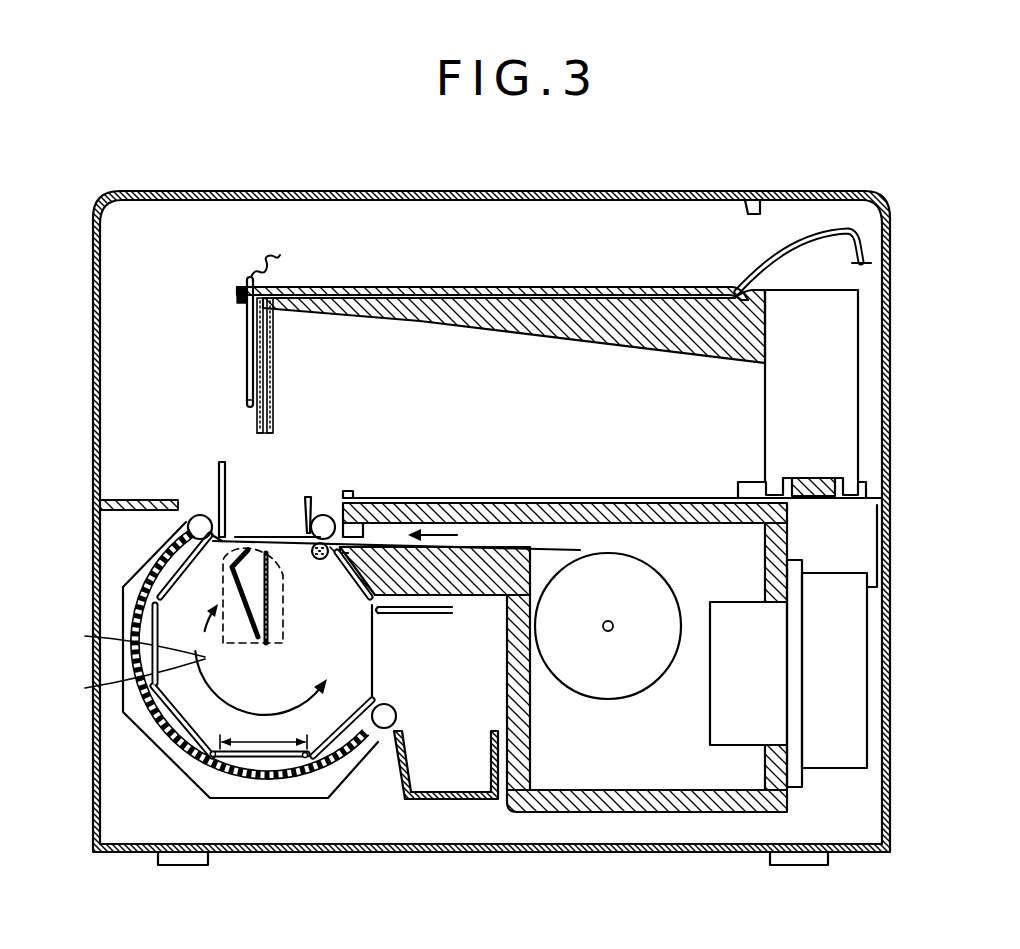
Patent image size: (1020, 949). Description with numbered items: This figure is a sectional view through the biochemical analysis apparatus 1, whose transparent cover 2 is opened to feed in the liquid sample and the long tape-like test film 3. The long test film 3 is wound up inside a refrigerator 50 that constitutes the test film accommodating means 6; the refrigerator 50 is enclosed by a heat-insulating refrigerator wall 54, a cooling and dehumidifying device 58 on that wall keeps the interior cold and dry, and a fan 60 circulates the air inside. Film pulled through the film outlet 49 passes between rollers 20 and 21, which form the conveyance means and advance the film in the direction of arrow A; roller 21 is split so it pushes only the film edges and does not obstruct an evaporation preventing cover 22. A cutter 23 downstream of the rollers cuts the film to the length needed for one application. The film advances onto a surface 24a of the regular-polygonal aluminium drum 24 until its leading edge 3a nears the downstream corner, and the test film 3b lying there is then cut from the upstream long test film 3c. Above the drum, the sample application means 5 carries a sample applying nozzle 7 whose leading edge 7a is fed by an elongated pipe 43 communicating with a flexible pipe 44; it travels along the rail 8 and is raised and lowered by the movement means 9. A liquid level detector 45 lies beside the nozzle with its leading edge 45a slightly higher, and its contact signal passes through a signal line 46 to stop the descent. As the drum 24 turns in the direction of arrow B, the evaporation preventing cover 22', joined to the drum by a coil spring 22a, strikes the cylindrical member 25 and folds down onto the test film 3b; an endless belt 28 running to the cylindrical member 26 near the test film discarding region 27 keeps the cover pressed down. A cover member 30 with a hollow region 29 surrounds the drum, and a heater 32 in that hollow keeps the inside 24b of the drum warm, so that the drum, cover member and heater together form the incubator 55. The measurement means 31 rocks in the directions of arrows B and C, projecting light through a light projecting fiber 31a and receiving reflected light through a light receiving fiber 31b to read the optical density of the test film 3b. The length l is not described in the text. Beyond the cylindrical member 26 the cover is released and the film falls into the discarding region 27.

The biochemical analysis apparatus 1 is at (759, 163).
The transparent cover 2 is at (315, 191).
The long tape-like test film 3 is at (580, 550).
The leading edge 3a is at (232, 523).
The test film 3b is at (304, 524).
The long test film 3c is at (388, 538).
The sample application means 5 is at (630, 287).
The test film accommodating means 6 is at (559, 478).
The sample applying nozzle 7 is at (275, 370).
The leading edge 7a is at (277, 433).
The rail 8 is at (827, 475).
The movement means 9 is at (842, 367).
The roller 20 is at (335, 520).
The roller 21 is at (318, 560).
The evaporation preventing cover 22 is at (345, 589).
The evaporation preventing cover 22' is at (193, 473).
The coil spring 22a is at (380, 614).
The cutter 23 is at (324, 514).
The regular-polygonal aluminium drum 24 is at (377, 650).
The surface 24a is at (310, 540).
The inside 24b is at (338, 670).
The cylindrical member 25 is at (163, 497).
The cylindrical member 26 is at (397, 722).
The test film discarding region 27 is at (428, 786).
The endless belt 28 is at (333, 768).
The hollow region 29 is at (178, 740).
The cover member 30 is at (143, 550).
The measurement means 31 is at (270, 657).
The light projecting fiber 31a is at (236, 640).
The light receiving fiber 31b is at (272, 612).
The heater 32 is at (297, 765).
The elongated pipe 43 is at (283, 312).
The flexible pipe 44 is at (850, 230).
The liquid level detector 45 is at (248, 332).
The leading edge 45a is at (250, 406).
The signal line 46 is at (298, 243).
The film outlet 49 is at (356, 493).
The refrigerator 50 is at (677, 770).
The refrigerator wall 54 is at (557, 813).
The incubator 55 is at (128, 739).
The cooling and dehumidifying device 58 is at (840, 648).
The fan 60 is at (777, 636).
The arrow A is at (442, 532).
The arrow B is at (131, 684).
The arrow C is at (131, 639).
The length l is at (237, 780).